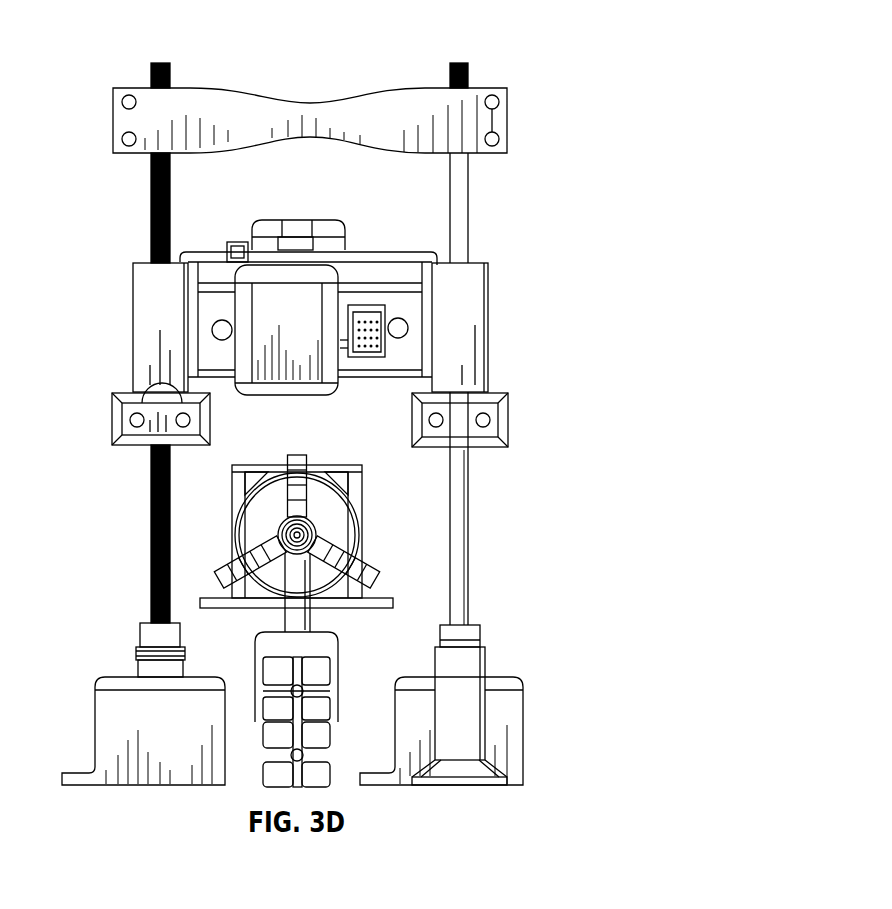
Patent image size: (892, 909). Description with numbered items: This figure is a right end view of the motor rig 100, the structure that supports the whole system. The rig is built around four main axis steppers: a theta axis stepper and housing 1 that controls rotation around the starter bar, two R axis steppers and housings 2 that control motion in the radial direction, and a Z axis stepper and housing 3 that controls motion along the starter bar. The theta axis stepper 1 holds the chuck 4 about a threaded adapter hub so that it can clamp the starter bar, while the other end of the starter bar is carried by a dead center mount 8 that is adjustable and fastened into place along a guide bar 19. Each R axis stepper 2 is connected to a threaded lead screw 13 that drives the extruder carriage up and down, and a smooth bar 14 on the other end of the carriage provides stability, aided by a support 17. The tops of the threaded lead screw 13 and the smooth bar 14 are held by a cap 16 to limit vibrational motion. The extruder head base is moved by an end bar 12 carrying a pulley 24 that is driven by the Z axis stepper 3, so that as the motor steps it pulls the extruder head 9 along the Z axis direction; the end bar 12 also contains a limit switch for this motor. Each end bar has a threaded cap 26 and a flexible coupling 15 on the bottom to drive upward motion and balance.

The motor rig 100 is at (487, 47).
The cap 16 is at (500, 122).
The extruder head 9 is at (288, 222).
The Z axis stepper and housing 3 is at (298, 293).
The pulley 24 is at (405, 325).
The end bar 12 is at (480, 345).
The threaded cap 26 is at (111, 424).
The threaded lead screw 13 is at (150, 495).
The smooth bar 14 is at (470, 528).
The theta axis stepper and housing 1 is at (337, 468).
The chuck 4 is at (345, 540).
The dead center mount 8 is at (284, 532).
The guide bar 19 is at (333, 702).
The flexible coupling 15 is at (140, 652).
The support 17 is at (472, 660).
The R axis stepper and housing 2 is at (108, 718).